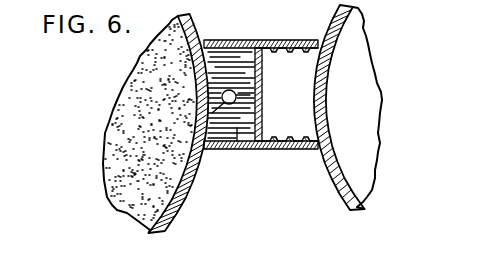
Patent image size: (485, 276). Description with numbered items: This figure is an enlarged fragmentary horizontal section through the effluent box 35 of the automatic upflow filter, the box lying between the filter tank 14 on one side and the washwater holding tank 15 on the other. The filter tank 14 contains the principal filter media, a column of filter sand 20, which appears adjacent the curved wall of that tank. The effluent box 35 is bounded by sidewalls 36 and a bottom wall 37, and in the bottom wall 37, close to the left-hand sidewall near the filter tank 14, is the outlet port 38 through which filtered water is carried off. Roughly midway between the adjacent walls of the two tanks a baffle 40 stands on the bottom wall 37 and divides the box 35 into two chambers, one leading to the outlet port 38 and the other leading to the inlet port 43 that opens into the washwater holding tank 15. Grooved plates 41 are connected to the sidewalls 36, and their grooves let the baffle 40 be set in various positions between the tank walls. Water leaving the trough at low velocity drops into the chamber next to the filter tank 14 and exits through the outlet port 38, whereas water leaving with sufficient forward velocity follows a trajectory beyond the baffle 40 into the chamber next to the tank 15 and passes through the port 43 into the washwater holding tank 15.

The filter tank 14 is at (189, 196).
The washwater holding tank 15 is at (341, 169).
The filter sand 20 is at (142, 188).
The effluent box 35 is at (304, 92).
The sidewalls 36 is at (278, 40).
The bottom wall 37 is at (237, 143).
The outlet port 38 is at (193, 111).
The baffle 40 is at (255, 75).
The grooved plates 41 is at (287, 51).
The inlet port 43 is at (321, 113).